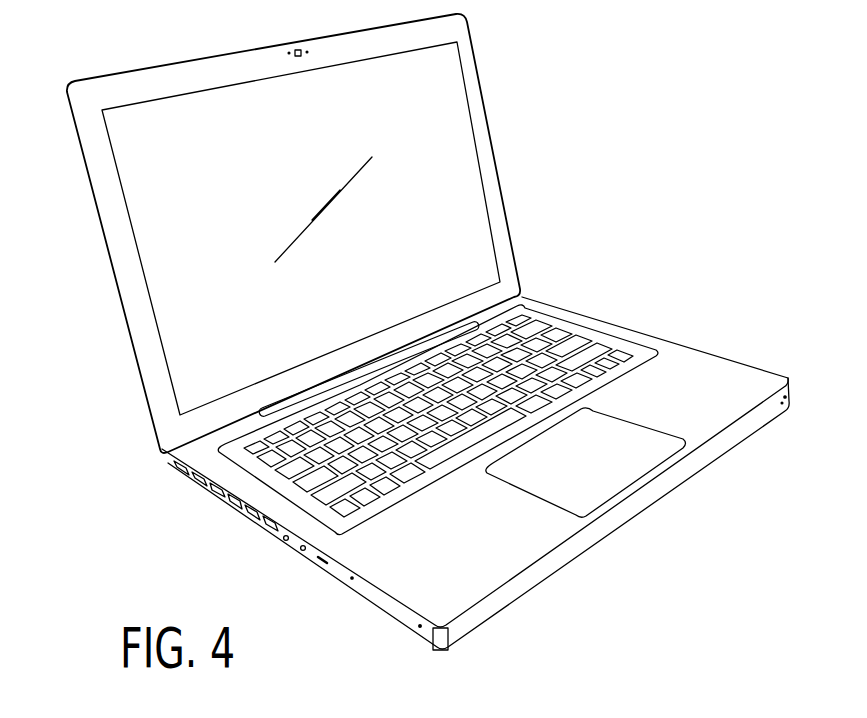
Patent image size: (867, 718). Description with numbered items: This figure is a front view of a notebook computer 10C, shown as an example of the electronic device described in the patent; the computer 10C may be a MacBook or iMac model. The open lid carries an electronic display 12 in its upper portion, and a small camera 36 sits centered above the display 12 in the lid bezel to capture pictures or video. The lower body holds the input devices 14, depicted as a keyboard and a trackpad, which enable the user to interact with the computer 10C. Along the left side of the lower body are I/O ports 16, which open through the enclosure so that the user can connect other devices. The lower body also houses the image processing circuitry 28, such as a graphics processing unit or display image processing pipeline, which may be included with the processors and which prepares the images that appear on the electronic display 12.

The computer 10C is at (155, 40).
The electronic display 12 is at (420, 170).
The input devices 14 is at (585, 340).
The I/O ports 16 is at (193, 488).
The image processing circuitry 28 is at (740, 372).
The camera 36 is at (296, 49).